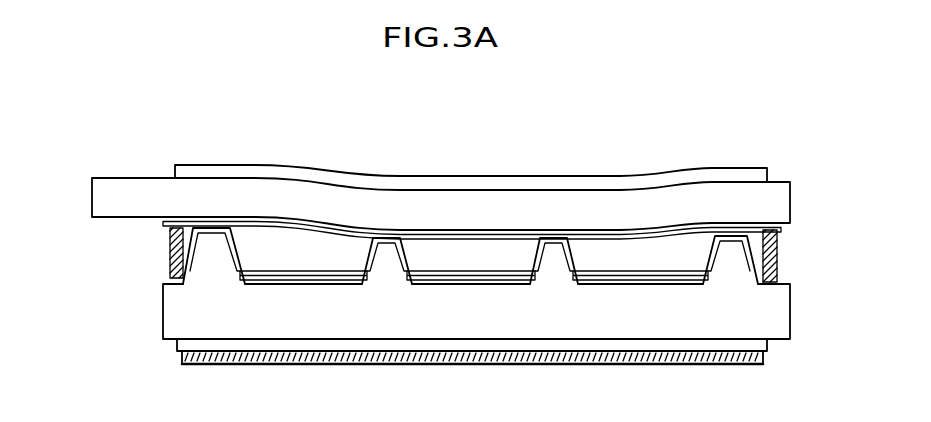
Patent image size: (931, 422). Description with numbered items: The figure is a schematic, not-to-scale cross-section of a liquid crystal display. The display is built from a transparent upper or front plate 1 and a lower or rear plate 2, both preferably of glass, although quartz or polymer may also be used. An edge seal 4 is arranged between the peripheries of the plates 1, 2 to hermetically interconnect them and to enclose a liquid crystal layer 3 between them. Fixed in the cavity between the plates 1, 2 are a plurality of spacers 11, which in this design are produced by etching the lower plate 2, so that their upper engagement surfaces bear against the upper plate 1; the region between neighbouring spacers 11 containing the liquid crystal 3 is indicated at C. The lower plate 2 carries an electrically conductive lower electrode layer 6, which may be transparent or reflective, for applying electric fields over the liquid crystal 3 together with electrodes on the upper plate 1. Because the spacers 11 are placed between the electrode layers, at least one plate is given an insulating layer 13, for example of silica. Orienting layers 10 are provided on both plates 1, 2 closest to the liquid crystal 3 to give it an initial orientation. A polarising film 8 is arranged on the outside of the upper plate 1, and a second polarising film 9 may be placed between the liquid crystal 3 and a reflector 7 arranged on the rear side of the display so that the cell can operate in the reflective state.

The upper plate 1 is at (143, 196).
The lower plate 2 is at (205, 309).
The liquid crystal layer 3 is at (464, 260).
The edge seal 4 is at (777, 244).
The lower electrode layer 6 is at (437, 283).
The reflector 7 is at (699, 365).
The polarising film 8 is at (515, 185).
The second polarising film 9 is at (768, 344).
The orienting layer 10 is at (165, 279).
The spacer 11 is at (388, 262).
The insulating layer 13 is at (163, 281).
The discharge cell C is at (286, 250).